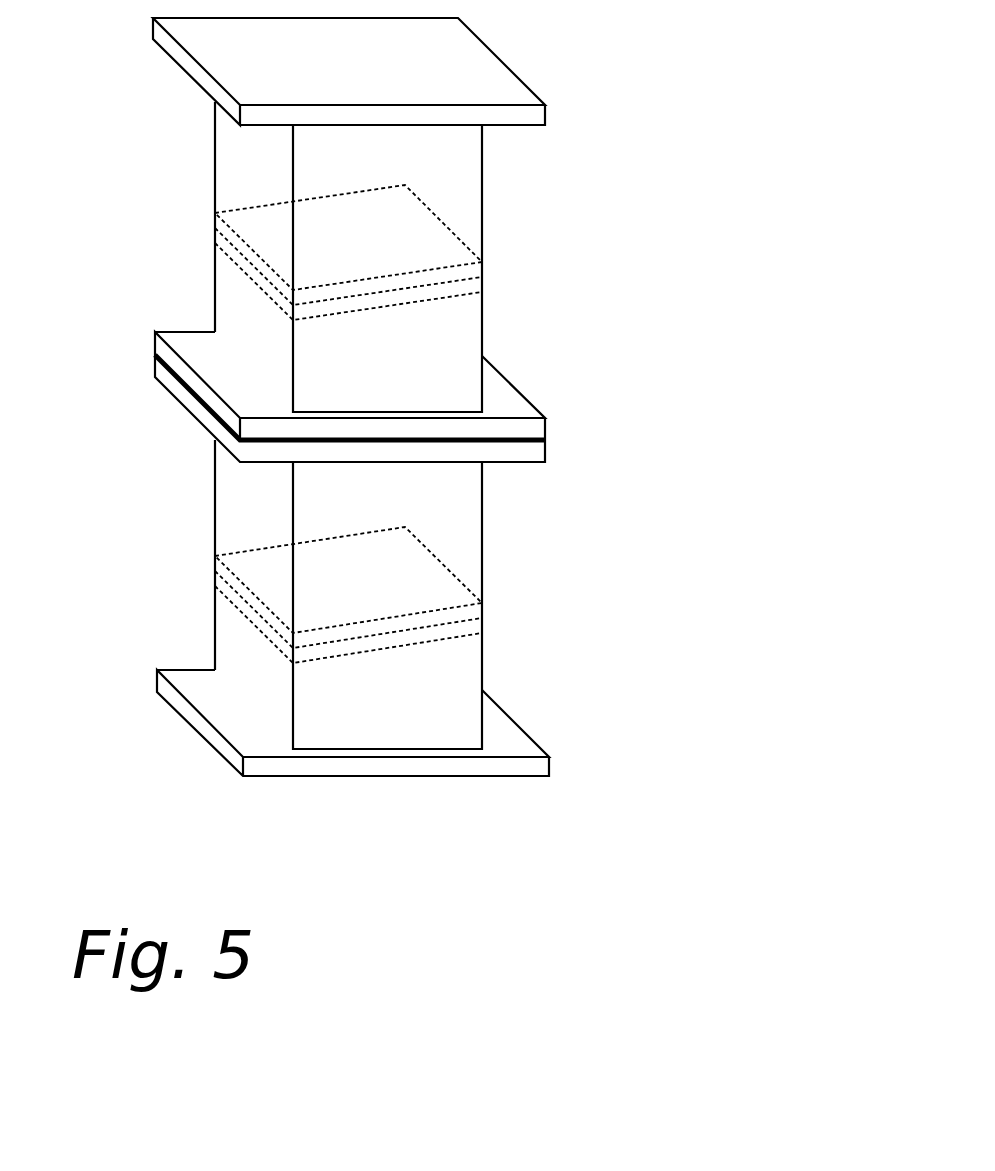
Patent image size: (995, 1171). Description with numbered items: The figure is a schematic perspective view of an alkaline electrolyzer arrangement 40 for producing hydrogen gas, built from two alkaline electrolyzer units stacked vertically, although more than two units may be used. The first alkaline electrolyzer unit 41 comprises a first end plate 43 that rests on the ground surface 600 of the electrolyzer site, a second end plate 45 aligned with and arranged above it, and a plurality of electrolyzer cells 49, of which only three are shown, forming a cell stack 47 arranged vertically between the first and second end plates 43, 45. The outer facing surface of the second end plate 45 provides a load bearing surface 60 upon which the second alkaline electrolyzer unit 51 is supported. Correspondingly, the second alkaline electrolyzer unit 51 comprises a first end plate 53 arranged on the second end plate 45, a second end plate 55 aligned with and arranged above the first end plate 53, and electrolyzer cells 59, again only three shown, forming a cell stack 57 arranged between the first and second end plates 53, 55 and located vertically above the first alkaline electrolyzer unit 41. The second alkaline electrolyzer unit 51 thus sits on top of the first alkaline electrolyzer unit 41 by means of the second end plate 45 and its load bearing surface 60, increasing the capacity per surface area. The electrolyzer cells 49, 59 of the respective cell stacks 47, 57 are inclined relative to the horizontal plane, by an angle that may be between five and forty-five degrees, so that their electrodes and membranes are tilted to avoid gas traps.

The alkaline electrolyzer arrangement 40 is at (465, 392).
The first alkaline electrolyzer unit 41 is at (419, 575).
The first end plate 43 is at (549, 757).
The second end plate 45 is at (542, 457).
The cell stack 47 is at (485, 678).
The electrolyzer cells 49 is at (193, 563).
The second alkaline electrolyzer unit 51 is at (411, 257).
The first end plate 53 is at (525, 395).
The second end plate 55 is at (474, 40).
The cell stack 57 is at (478, 322).
The electrolyzer cells 59 is at (192, 230).
The load bearing surface 60 is at (181, 367).
The ground surface 600 is at (465, 418).